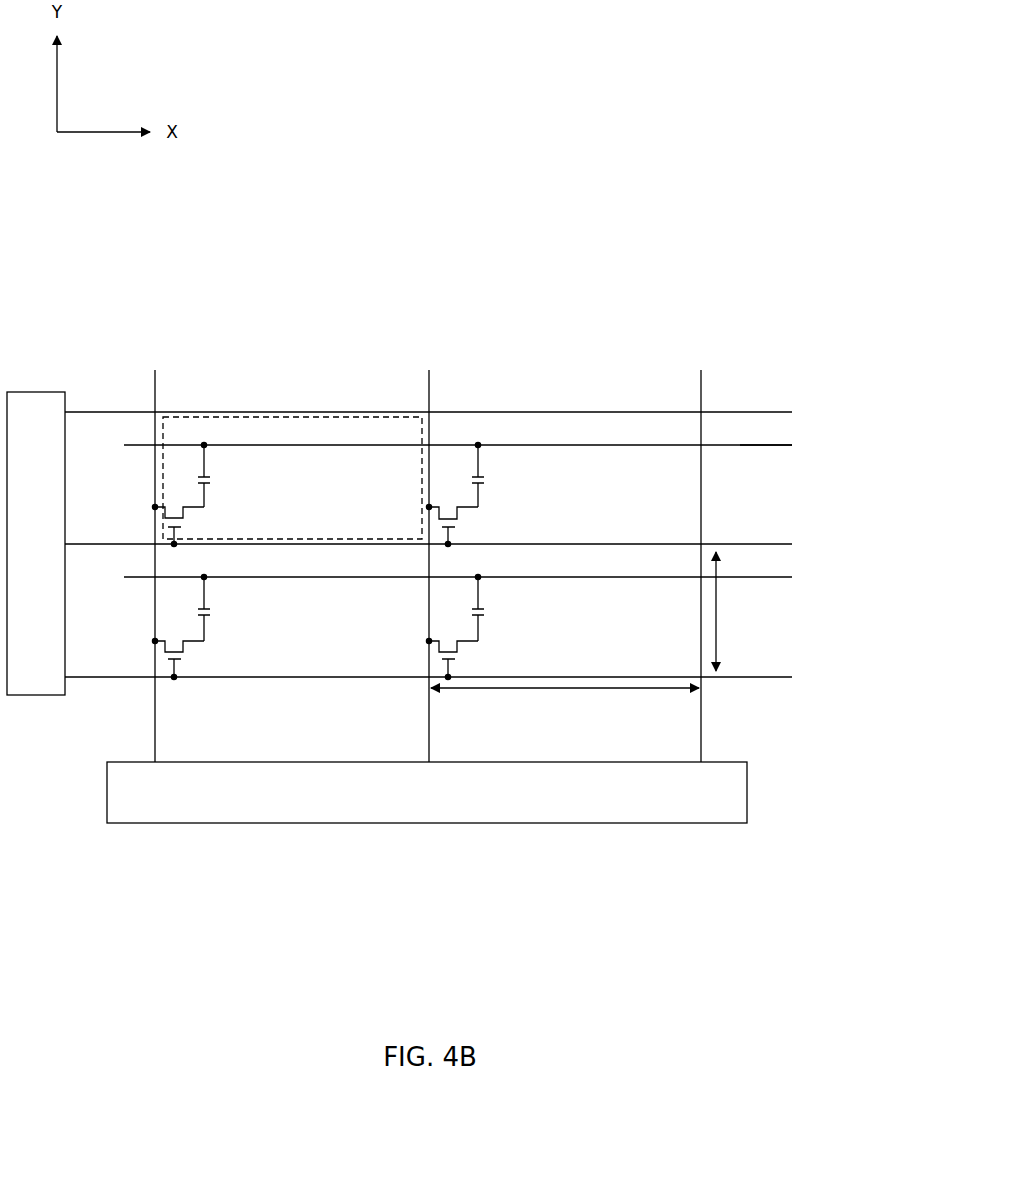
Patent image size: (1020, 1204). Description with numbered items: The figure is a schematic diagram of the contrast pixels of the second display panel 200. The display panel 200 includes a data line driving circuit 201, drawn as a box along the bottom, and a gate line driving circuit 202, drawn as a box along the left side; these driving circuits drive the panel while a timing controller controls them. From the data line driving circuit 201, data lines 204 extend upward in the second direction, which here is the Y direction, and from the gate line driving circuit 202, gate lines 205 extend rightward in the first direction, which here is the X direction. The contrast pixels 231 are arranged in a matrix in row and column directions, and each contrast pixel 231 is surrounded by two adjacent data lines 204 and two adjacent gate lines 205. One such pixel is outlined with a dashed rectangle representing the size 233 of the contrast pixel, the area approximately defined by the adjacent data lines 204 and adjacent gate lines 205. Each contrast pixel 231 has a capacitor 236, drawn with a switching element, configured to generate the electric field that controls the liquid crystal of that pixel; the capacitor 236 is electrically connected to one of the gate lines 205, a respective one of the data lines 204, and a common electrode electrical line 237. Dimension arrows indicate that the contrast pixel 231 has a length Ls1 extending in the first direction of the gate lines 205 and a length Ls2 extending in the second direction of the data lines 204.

The display panel 200 is at (668, 192).
The data line driving circuit 201 is at (143, 787).
The gate line driving circuit 202 is at (33, 690).
The data line 204 is at (155, 718).
The gate line 205 is at (123, 412).
The contrast pixel 231 is at (565, 430).
The size of the contrast pixel 233 is at (287, 412).
The capacitor 236 is at (495, 478).
The common electrode electrical line 237 is at (750, 444).
The length of the contrast pixel Ls1 is at (555, 690).
The length of the contrast pixel Ls2 is at (716, 617).